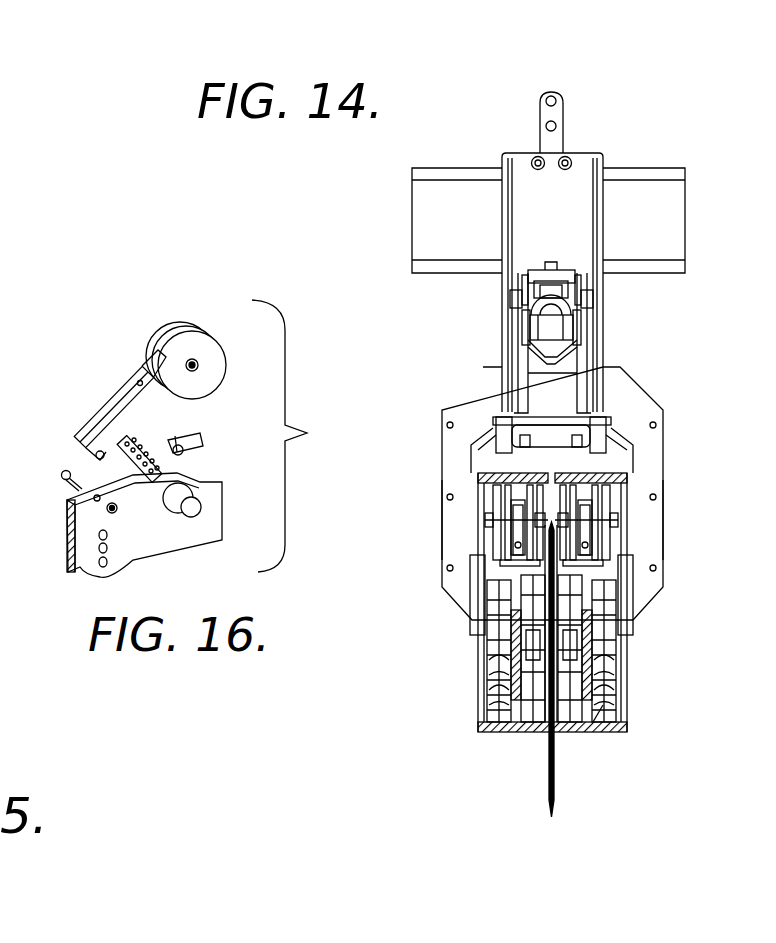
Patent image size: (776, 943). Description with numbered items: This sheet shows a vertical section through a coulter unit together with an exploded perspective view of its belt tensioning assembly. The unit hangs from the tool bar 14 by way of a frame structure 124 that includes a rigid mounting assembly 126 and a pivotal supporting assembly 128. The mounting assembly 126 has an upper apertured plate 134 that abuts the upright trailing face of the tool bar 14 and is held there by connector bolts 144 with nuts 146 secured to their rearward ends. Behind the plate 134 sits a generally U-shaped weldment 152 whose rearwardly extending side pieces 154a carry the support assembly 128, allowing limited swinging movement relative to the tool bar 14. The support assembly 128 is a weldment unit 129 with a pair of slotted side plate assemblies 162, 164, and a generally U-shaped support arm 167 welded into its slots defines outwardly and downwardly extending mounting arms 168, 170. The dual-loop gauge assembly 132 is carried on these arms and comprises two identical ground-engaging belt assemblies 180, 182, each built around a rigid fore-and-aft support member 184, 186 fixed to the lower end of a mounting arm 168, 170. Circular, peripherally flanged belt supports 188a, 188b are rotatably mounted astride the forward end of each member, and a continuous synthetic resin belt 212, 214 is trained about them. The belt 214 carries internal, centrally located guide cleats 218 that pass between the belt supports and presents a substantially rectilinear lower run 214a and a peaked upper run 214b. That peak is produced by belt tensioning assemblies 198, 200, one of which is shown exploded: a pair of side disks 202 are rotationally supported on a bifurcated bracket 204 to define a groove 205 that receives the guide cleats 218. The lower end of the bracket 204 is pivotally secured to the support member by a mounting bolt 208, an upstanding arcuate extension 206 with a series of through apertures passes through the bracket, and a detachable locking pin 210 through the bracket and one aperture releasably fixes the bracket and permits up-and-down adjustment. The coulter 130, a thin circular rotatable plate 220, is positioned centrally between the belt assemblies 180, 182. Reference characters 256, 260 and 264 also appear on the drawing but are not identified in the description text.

In FIG. 14, the tool bar 14 is at (664, 185).
In FIG. 14, the frame structure 124 is at (714, 300).
In FIG. 16, the frame structure 124 is at (0, 272).
In FIG. 14, the mounting assembly 126 is at (486, 283).
In FIG. 14, the supporting assembly 128 is at (418, 382).
In FIG. 14, the weldment unit 129 is at (443, 510).
In FIG. 14, the coulter 130 is at (538, 810).
In FIG. 14, the dual-loop gauge assembly 132 is at (418, 704).
In FIG. 14, the upper apertured plate 134 is at (524, 158).
In FIG. 14, the connector bolts 144 is at (565, 157).
In FIG. 14, the nuts 146 is at (571, 162).
In FIG. 14, the U-shaped weldment 152 is at (584, 272).
In FIG. 14, the side pieces 154a is at (551, 262).
In FIG. 14, the side plate assembly 162 is at (580, 358).
In FIG. 14, the side plate assembly 164 is at (520, 361).
In FIG. 14, the U-shaped support arm 167 is at (656, 397).
In FIG. 14, the mounting arm 168 is at (657, 512).
In FIG. 14, the mounting arm 170 is at (447, 462).
In FIG. 14, the belt assembly 180 is at (648, 702).
In FIG. 14, the belt assembly 182 is at (453, 734).
In FIG. 14, the support member 184 is at (594, 655).
In FIG. 14, the support member 186 is at (497, 640).
In FIG. 16, the support member 186 is at (152, 540).
In FIG. 14, the belt support 188a is at (609, 683).
In FIG. 14, the belt support 188b is at (481, 688).
In FIG. 14, the belt tensioning assembly 198 is at (628, 523).
In FIG. 14, the belt tensioning assembly 200 is at (488, 534).
In FIG. 16, the belt tensioning assembly 200 is at (178, 312).
In FIG. 16, the side disks 202 is at (150, 345).
In FIG. 16, the bifurcated bracket 204 is at (108, 410).
In FIG. 16, the groove 205 is at (164, 323).
In FIG. 16, the arcuate extension 206 is at (150, 431).
In FIG. 16, the mounting bolt 208 is at (62, 487).
In FIG. 16, the locking pin 210 is at (184, 452).
In FIG. 14, the belt 212 is at (500, 737).
In FIG. 14, the belt 214 is at (578, 742).
In FIG. 14, the lower run 214a is at (617, 729).
In FIG. 14, the upper run 214b is at (616, 474).
In FIG. 14, the guide cleats 218 is at (597, 734).
In FIG. 14, the rotatable plate 220 is at (548, 755).
In FIG. 14, the pivot arch 256 is at (584, 302).
In FIG. 14, the clamp block 260 is at (604, 283).
In FIG. 14, the clamp jaw 264 is at (574, 328).